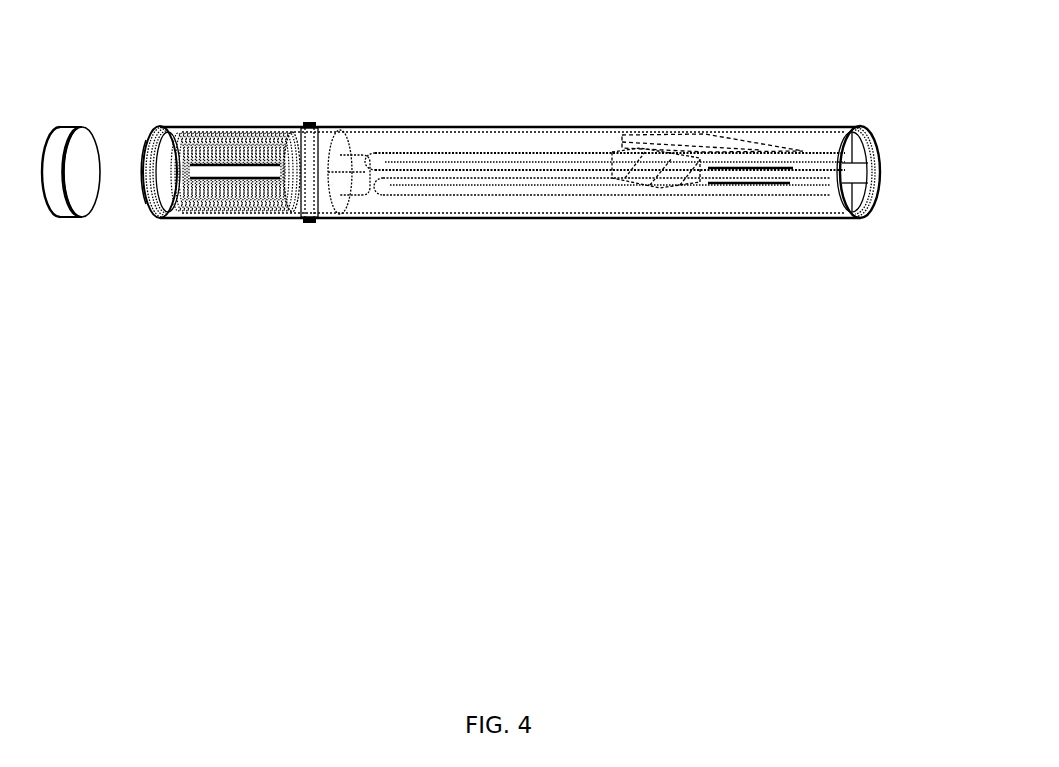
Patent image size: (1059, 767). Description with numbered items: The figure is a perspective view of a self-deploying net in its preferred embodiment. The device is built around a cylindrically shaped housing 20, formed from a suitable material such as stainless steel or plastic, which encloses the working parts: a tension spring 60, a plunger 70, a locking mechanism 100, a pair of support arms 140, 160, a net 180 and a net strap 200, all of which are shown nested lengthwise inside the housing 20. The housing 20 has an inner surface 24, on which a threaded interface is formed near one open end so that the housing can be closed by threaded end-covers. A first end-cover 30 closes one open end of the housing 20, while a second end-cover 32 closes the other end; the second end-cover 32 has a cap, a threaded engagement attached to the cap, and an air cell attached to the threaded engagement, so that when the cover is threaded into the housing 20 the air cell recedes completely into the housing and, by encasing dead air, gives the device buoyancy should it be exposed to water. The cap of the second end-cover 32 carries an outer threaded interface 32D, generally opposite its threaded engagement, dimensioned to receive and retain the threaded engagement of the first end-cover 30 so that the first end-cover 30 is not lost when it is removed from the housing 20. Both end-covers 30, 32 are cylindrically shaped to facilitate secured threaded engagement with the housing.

The housing 20 is at (688, 220).
The inner surface 24 is at (868, 128).
The first end-cover 30 is at (89, 195).
The second end-cover 32 is at (156, 128).
The outer threaded interface 32D is at (148, 152).
The tension spring 60 is at (219, 217).
The plunger 70 is at (346, 137).
The locking mechanism 100 is at (313, 198).
The support arm 140 is at (453, 192).
The support arm 160 is at (448, 153).
The net 180 is at (616, 156).
The net strap 200 is at (701, 145).